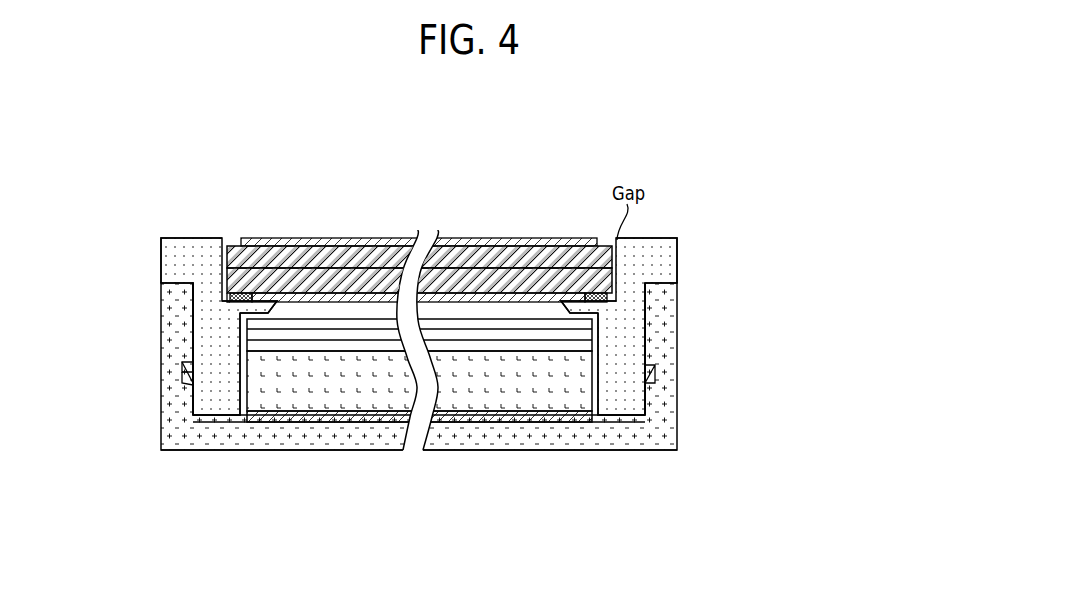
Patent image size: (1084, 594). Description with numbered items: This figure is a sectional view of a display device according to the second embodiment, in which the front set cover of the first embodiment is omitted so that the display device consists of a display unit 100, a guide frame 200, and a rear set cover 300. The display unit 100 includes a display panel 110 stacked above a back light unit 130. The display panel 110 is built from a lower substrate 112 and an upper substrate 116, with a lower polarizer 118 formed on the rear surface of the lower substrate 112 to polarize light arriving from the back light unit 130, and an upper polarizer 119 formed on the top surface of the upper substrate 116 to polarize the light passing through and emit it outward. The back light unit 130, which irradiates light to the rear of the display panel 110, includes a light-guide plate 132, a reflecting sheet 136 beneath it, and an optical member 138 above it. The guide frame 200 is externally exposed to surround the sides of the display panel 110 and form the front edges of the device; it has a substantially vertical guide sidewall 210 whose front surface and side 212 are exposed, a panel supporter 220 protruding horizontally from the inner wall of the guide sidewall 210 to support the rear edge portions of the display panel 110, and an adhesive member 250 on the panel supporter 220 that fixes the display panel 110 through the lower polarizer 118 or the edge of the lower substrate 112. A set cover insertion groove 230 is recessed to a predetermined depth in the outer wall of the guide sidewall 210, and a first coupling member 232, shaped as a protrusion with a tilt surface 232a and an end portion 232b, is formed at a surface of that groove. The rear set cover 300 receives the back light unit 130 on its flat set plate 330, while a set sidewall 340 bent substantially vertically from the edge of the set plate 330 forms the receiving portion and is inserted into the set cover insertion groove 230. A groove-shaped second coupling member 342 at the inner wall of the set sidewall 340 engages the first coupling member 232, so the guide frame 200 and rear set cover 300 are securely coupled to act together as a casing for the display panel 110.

The display unit 100 is at (419, 361).
The display panel 110 is at (419, 343).
The lower substrate 112 is at (463, 284).
The upper substrate 116 is at (507, 264).
The lower polarizer 118 is at (327, 297).
The upper polarizer 119 is at (380, 242).
The back light unit 130 is at (419, 420).
The light-guide plate 132 is at (340, 393).
The reflecting sheet 136 is at (378, 415).
The optical member 138 is at (280, 323).
The guide frame 200 is at (431, 326).
The guide sidewall 210 is at (630, 300).
The side 212 is at (663, 265).
The panel supporter 220 is at (580, 308).
The set cover insertion groove 230 is at (645, 323).
The first coupling member 232 is at (405, 371).
The tilt surface 232a is at (187, 373).
The end portion 232b is at (183, 364).
The adhesive member 250 is at (593, 295).
The rear set cover 300 is at (490, 378).
The set plate 330 is at (640, 437).
The set sidewall 340 is at (667, 408).
The second coupling member 342 is at (673, 382).